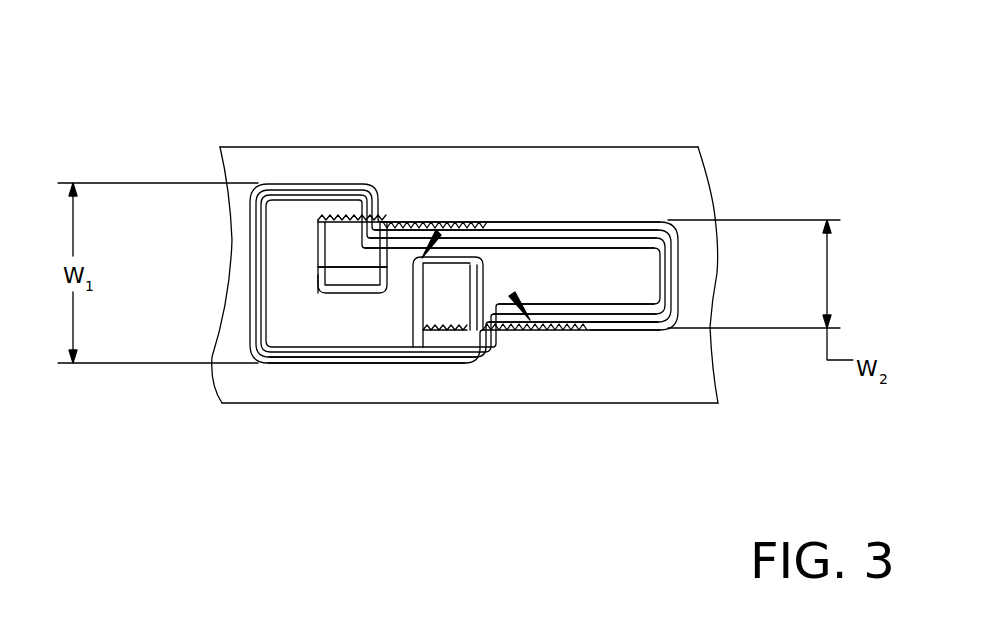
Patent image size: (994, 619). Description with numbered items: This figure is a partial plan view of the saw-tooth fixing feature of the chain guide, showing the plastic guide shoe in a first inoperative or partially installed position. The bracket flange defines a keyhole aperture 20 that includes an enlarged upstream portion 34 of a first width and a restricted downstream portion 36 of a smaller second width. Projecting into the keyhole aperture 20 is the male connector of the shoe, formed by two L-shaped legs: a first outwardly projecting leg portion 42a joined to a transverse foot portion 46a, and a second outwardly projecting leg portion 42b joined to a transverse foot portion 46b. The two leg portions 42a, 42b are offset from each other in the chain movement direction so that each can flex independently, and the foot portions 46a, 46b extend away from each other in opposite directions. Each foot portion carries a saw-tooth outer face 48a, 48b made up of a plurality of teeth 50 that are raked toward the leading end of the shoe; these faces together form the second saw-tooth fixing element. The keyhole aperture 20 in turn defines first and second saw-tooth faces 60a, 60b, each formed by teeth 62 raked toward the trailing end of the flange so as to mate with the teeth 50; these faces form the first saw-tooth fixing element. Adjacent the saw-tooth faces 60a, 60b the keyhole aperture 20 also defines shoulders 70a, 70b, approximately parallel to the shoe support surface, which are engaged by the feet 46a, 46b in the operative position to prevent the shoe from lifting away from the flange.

The keyhole aperture 20 is at (283, 207).
The enlarged upstream portion 34 is at (285, 352).
The restricted downstream portion 36 is at (608, 312).
The leg portion 42a is at (325, 282).
The leg portion 42b is at (462, 258).
The foot portion 46a is at (340, 257).
The foot portion 46b is at (452, 298).
The saw-tooth outer face 48a is at (352, 190).
The saw-tooth outer face 48b is at (466, 365).
The teeth 50 is at (343, 218).
The saw-tooth face 60a is at (408, 255).
The saw-tooth face 60b is at (512, 294).
The teeth 62 is at (494, 226).
The shoulder 70a is at (531, 238).
The shoulder 70b is at (650, 299).